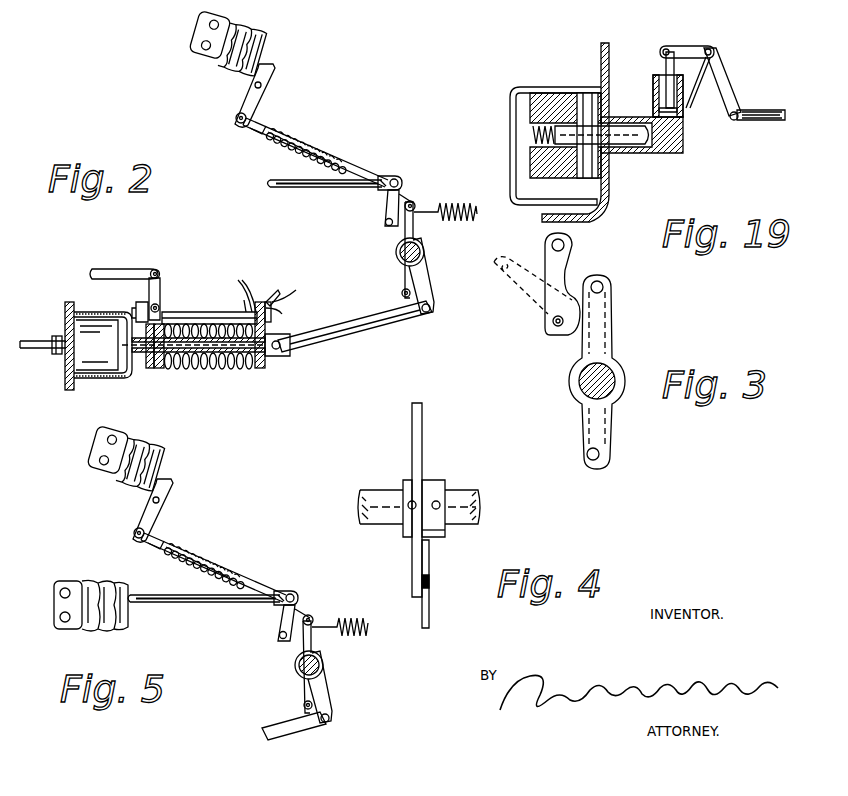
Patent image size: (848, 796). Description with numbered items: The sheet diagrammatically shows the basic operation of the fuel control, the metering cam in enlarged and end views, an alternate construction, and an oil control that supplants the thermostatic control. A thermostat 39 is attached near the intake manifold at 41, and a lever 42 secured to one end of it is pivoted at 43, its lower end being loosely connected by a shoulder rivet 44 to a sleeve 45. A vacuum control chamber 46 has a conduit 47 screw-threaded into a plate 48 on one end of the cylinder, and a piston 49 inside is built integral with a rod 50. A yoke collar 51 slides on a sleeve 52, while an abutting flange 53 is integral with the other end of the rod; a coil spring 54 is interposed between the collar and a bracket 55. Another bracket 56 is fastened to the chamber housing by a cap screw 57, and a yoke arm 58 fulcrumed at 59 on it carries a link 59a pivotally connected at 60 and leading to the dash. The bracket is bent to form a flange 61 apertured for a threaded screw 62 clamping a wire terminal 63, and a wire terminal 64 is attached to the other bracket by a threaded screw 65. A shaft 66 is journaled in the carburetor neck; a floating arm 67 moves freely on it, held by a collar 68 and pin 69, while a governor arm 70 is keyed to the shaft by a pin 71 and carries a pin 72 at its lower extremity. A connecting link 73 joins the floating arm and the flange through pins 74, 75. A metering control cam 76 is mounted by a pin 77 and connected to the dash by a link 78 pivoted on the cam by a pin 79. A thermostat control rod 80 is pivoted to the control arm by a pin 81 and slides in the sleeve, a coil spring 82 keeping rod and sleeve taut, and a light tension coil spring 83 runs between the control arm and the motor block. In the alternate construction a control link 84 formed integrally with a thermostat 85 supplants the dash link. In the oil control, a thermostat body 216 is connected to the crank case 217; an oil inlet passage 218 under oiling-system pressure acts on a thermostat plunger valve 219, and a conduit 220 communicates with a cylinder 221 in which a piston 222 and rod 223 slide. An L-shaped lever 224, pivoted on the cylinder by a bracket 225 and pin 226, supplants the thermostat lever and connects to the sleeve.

In FIG. 2, the thermostat 39 is at (255, 40).
In FIG. 5, the thermostat 39 is at (154, 459).
In FIG. 2, the attachment point of thermostat 41 is at (203, 30).
In FIG. 5, the attachment point of thermostat 41 is at (91, 449).
In FIG. 2, the lever 42 is at (256, 99).
In FIG. 5, the lever 42 is at (163, 510).
In FIG. 2, the pivot of lever 43 is at (262, 85).
In FIG. 5, the pivot of lever 43 is at (174, 495).
In FIG. 2, the shoulder rivet 44 is at (235, 118).
In FIG. 19, the shoulder rivet 44 is at (733, 121).
In FIG. 5, the shoulder rivet 44 is at (117, 533).
In FIG. 2, the sleeve 45 is at (260, 134).
In FIG. 19, the sleeve 45 is at (772, 122).
In FIG. 5, the sleeve 45 is at (205, 567).
In FIG. 2, the vacuum control chamber 46 is at (98, 384).
In FIG. 2, the conduit 47 is at (44, 349).
In FIG. 2, the plate 48 is at (66, 316).
In FIG. 2, the piston 49 is at (122, 357).
In FIG. 2, the rod 50 is at (144, 366).
In FIG. 2, the yoke collar 51 is at (168, 367).
In FIG. 2, the sleeve 52 is at (147, 368).
In FIG. 2, the abutting flange 53 is at (265, 366).
In FIG. 2, the coil spring 54 is at (225, 368).
In FIG. 2, the bracket 55 is at (268, 318).
In FIG. 2, the bracket 56 is at (218, 311).
In FIG. 2, the cap screw 57 is at (136, 306).
In FIG. 2, the yoke arm 58 is at (165, 292).
In FIG. 2, the fulcrum of yoke arm 59 is at (163, 307).
In FIG. 2, the link 59a is at (110, 276).
In FIG. 2, the pivot connection 60 is at (160, 270).
In FIG. 2, the flange 61 is at (276, 290).
In FIG. 2, the threaded screw 62 is at (284, 308).
In FIG. 2, the wire terminal 63 is at (284, 300).
In FIG. 2, the wire terminal 64 is at (237, 282).
In FIG. 2, the threaded screw 65 is at (250, 312).
In FIG. 2, the shaft 66 is at (422, 252).
In FIG. 3, the shaft 66 is at (612, 371).
In FIG. 4, the shaft 66 is at (470, 502).
In FIG. 5, the shaft 66 is at (330, 663).
In FIG. 2, the floating arm 67 is at (428, 292).
In FIG. 4, the floating arm 67 is at (430, 601).
In FIG. 5, the floating arm 67 is at (337, 687).
In FIG. 2, the collar 68 is at (423, 259).
In FIG. 4, the collar 68 is at (440, 482).
In FIG. 5, the collar 68 is at (292, 667).
In FIG. 4, the pin 69 is at (442, 504).
In FIG. 2, the governor arm 70 is at (405, 242).
In FIG. 3, the governor arm 70 is at (604, 324).
In FIG. 4, the governor arm 70 is at (422, 445).
In FIG. 5, the governor arm 70 is at (292, 667).
In FIG. 4, the pin 71 is at (408, 500).
In FIG. 2, the pin 72 is at (402, 294).
In FIG. 4, the pin 72 is at (430, 581).
In FIG. 5, the pin 72 is at (292, 710).
In FIG. 2, the connecting link 73 is at (376, 329).
In FIG. 5, the connecting link 73 is at (294, 731).
In FIG. 2, the pin 74 is at (283, 352).
In FIG. 2, the pin 75 is at (431, 312).
In FIG. 5, the pin 75 is at (345, 725).
In FIG. 2, the metering control cam 76 is at (387, 211).
In FIG. 3, the metering control cam 76 is at (570, 274).
In FIG. 5, the metering control cam 76 is at (274, 623).
In FIG. 2, the pin 77 is at (386, 223).
In FIG. 3, the pin 77 is at (556, 327).
In FIG. 5, the pin 77 is at (270, 638).
In FIG. 2, the link 78 is at (311, 187).
In FIG. 2, the pin 79 is at (398, 185).
In FIG. 5, the pin 79 is at (299, 593).
In FIG. 2, the thermostat control rod 80 is at (338, 180).
In FIG. 19, the thermostat control rod 80 is at (765, 112).
In FIG. 5, the thermostat control rod 80 is at (260, 583).
In FIG. 2, the pin 81 is at (415, 205).
In FIG. 5, the pin 81 is at (320, 611).
In FIG. 2, the coil spring 82 is at (304, 155).
In FIG. 5, the coil spring 82 is at (205, 566).
In FIG. 2, the light tension coil spring 83 is at (470, 224).
In FIG. 5, the light tension coil spring 83 is at (355, 635).
In FIG. 5, the control link 84 is at (204, 609).
In FIG. 5, the thermostat 85 is at (89, 614).
In FIG. 19, the thermostat body 216 is at (535, 88).
In FIG. 19, the crank case 217 is at (610, 206).
In FIG. 19, the oil inlet passage 218 is at (530, 135).
In FIG. 19, the thermostat plunger valve 219 is at (606, 123).
In FIG. 19, the conduit 220 is at (662, 138).
In FIG. 19, the cylinder 221 is at (660, 92).
In FIG. 19, the piston 222 is at (684, 108).
In FIG. 19, the rod 223 is at (664, 70).
In FIG. 19, the L-shaped lever 224 is at (688, 48).
In FIG. 19, the bracket 225 is at (690, 88).
In FIG. 19, the pin 226 is at (716, 56).